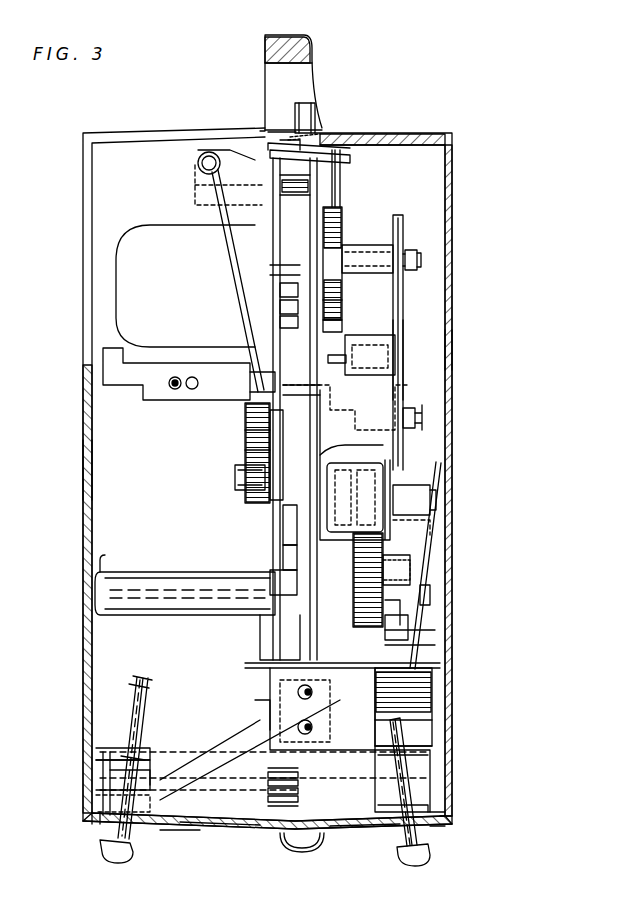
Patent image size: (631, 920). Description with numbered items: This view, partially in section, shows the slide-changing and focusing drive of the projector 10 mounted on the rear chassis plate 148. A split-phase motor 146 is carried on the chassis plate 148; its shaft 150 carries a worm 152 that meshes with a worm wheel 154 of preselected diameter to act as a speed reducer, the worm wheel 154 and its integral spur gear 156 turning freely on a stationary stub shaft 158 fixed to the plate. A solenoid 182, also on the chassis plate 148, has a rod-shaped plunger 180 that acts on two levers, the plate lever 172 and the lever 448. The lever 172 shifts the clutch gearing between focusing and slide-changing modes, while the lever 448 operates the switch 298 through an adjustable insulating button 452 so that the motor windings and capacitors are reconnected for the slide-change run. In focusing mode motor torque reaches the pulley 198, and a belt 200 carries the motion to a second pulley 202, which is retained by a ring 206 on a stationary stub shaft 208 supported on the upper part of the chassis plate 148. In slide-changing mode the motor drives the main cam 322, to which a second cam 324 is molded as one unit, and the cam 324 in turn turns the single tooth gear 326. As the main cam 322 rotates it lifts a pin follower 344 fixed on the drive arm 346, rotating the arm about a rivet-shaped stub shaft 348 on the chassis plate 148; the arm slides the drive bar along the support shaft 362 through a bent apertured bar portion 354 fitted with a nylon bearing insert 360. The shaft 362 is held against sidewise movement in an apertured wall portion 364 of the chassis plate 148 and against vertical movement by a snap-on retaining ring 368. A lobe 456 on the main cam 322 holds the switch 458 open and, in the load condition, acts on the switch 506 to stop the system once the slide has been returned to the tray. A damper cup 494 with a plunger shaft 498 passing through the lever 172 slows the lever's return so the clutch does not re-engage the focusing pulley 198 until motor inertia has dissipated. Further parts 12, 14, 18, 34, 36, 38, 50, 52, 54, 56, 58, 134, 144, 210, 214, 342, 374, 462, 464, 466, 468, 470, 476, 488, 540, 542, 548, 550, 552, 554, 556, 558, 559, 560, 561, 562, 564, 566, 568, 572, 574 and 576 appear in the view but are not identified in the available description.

The projector 10 is at (422, 107).
The base 12 is at (180, 859).
The housing wall 14 is at (479, 823).
The side wall 18 is at (85, 466).
The bottom wall 34 is at (214, 831).
The bottom wall portion 36 is at (353, 830).
The right side wall 38 is at (452, 352).
The knob 50 is at (292, 34).
The knob boss 52 is at (316, 110).
The left mounting bolt 54 is at (143, 695).
The right mounting bolt 56 is at (406, 797).
The foot 58 is at (297, 852).
The shaft end cap 134 is at (105, 568).
The roller shaft 144 is at (162, 606).
The motor 146 is at (432, 686).
The rear chassis plate 148 is at (308, 176).
The motor shaft 150 is at (336, 634).
The worm 152 is at (384, 548).
The worm wheel 154 is at (410, 622).
The spur gear 156 is at (410, 562).
The stationary stub shaft 158 is at (412, 577).
The plate lever 172 is at (386, 480).
The plunger 180 is at (437, 496).
The solenoid 182 is at (365, 466).
The pulley 198 is at (432, 517).
The belt 200 is at (404, 320).
The second pulley 202 is at (404, 232).
The retaining ring 206 is at (404, 251).
The stationary stub shaft 208 is at (418, 261).
The gear 210 is at (342, 228).
The cross member 214 is at (283, 268).
The switch 298 is at (437, 633).
The main cam 322 is at (275, 442).
The second cam 324 is at (246, 420).
The single tooth gear 326 is at (250, 456).
The collar 342 is at (285, 306).
The pin follower 344 is at (305, 386).
The drive arm 346 is at (335, 328).
The rivet-shaped stub shaft 348 is at (344, 312).
The bent apertured bar portion 354 is at (348, 362).
The nylon bearing insert 360 is at (350, 355).
The support shaft 362 is at (340, 190).
The apertured wall portion 364 is at (345, 160).
The snap-on retaining ring 368 is at (352, 149).
The collar 374 is at (285, 546).
The lever 448 is at (432, 541).
The adjustable insulating button 452 is at (427, 606).
The lobe 456 is at (292, 556).
The switch 458 is at (283, 290).
The bracket arm 462 is at (265, 362).
The bracket tab 464 is at (276, 390).
The bracket holes 466 is at (268, 374).
The lever 468 is at (238, 248).
The plate 470 is at (150, 240).
The collar 476 is at (290, 523).
The hub 488 is at (246, 490).
The damper cup 494 is at (410, 385).
The plunger shaft 498 is at (418, 418).
The switch 506 is at (275, 631).
The bolt head 540 is at (117, 863).
The bolt head 542 is at (415, 866).
The corner 548 is at (100, 824).
The corner 550 is at (438, 823).
The bracket top 552 is at (100, 735).
The bracket bottom 554 is at (105, 800).
The hidden bolt portion 556 is at (405, 737).
The block bottom 558 is at (420, 808).
The bracket 559 is at (110, 781).
The spring 560 is at (262, 806).
The bracket 561 is at (250, 750).
The plate 562 is at (240, 707).
The screw 564 is at (308, 130).
The hole 566 is at (313, 727).
The hole 568 is at (313, 692).
The bracket 572 is at (118, 773).
The block 574 is at (392, 778).
The plate 576 is at (262, 752).